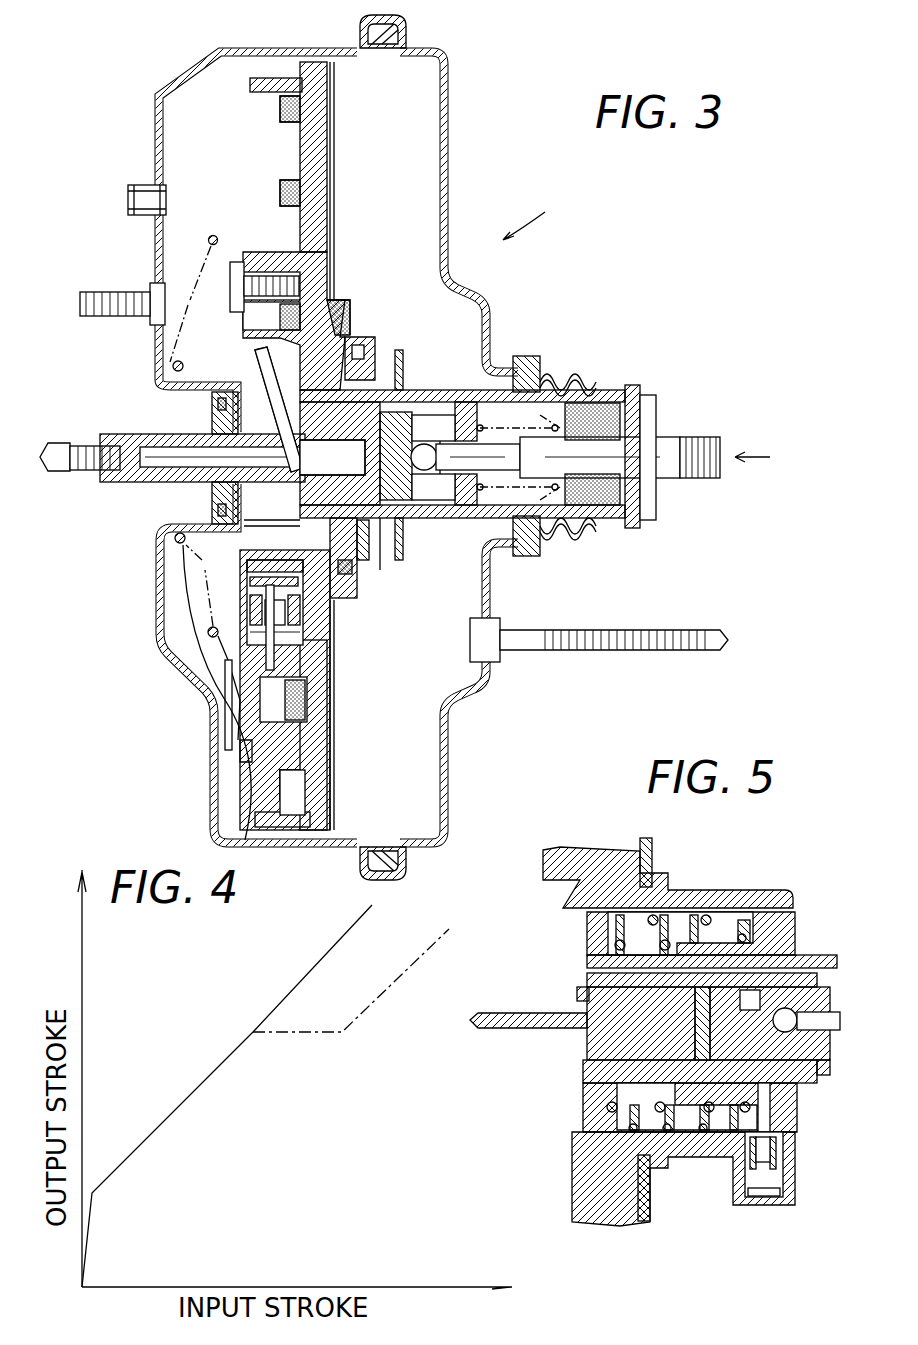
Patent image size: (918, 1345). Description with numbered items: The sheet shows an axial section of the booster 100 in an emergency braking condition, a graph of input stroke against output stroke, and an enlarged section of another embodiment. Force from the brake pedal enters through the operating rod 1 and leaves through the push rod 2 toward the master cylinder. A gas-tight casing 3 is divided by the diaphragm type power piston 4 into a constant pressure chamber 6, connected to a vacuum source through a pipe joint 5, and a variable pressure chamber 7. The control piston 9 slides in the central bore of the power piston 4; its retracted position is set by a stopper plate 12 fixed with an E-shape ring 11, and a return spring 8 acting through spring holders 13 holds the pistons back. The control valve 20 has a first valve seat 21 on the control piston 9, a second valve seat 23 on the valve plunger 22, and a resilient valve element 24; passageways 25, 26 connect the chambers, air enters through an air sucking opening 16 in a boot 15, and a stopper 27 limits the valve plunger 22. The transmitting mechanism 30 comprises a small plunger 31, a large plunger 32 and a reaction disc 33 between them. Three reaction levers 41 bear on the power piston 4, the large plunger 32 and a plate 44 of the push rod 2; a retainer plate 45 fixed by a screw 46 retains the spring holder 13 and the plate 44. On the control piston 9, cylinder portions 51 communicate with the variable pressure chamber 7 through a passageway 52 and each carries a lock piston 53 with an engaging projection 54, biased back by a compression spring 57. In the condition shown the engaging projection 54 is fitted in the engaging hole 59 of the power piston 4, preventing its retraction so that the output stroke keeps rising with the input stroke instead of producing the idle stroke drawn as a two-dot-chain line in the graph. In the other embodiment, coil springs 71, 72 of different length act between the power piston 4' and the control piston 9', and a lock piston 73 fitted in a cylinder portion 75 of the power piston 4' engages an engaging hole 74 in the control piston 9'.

In FIG. 3, the operating rod 1 is at (660, 440).
In FIG. 3, the push rod 2 is at (130, 470).
In FIG. 3, the casing 3 is at (448, 100).
In FIG. 3, the power piston 4 is at (308, 446).
In FIG. 3, the pipe joint 5 is at (136, 215).
In FIG. 3, the constant pressure chamber 6 is at (200, 86).
In FIG. 3, the variable pressure chamber 7 is at (428, 740).
In FIG. 3, the return spring 8 is at (214, 236).
In FIG. 3, the control piston 9 is at (462, 414).
In FIG. 3, the E-shape ring 11 is at (400, 350).
In FIG. 3, the stopper plate 12 is at (372, 560).
In FIG. 3, the spring holder 13 is at (242, 750).
In FIG. 3, the boot 15 is at (600, 370).
In FIG. 3, the air sucking opening 16 is at (648, 396).
In FIG. 3, the control valve 20 is at (505, 372).
In FIG. 3, the first valve seat 21 is at (462, 402).
In FIG. 3, the valve plunger 22 is at (405, 412).
In FIG. 3, the second valve seat 23 is at (440, 518).
In FIG. 3, the valve element 24 is at (462, 518).
In FIG. 3, the passageway 25 is at (405, 520).
In FIG. 3, the passageway 26 is at (372, 390).
In FIG. 3, the stopper 27 is at (388, 520).
In FIG. 3, the transmitting mechanism 30 is at (348, 332).
In FIG. 3, the small plunger 31 is at (352, 600).
In FIG. 3, the large plunger 32 is at (212, 490).
In FIG. 3, the reaction disc 33 is at (340, 402).
In FIG. 3, the reaction lever 41 is at (258, 372).
In FIG. 3, the plate 44 is at (250, 528).
In FIG. 3, the retainer plate 45 is at (225, 730).
In FIG. 3, the screw 46 is at (236, 266).
In FIG. 3, the cylinder portion 51 is at (250, 610).
In FIG. 3, the passageway 52 is at (245, 562).
In FIG. 3, the lock piston 53 is at (248, 592).
In FIG. 3, the engaging projection 54 is at (305, 640).
In FIG. 3, the compression spring 57 is at (208, 636).
In FIG. 3, the engaging hole 59 is at (270, 655).
In FIG. 3, the booster 100 is at (543, 210).
In FIG. 5, the power piston 4' is at (668, 854).
In FIG. 5, the control piston 9' is at (714, 935).
In FIG. 5, the coil spring 71 is at (748, 918).
In FIG. 5, the coil spring 72 is at (700, 915).
In FIG. 5, the lock piston 73 is at (775, 1172).
In FIG. 5, the engaging hole 74 is at (700, 1088).
In FIG. 5, the cylinder portion 75 is at (790, 1155).